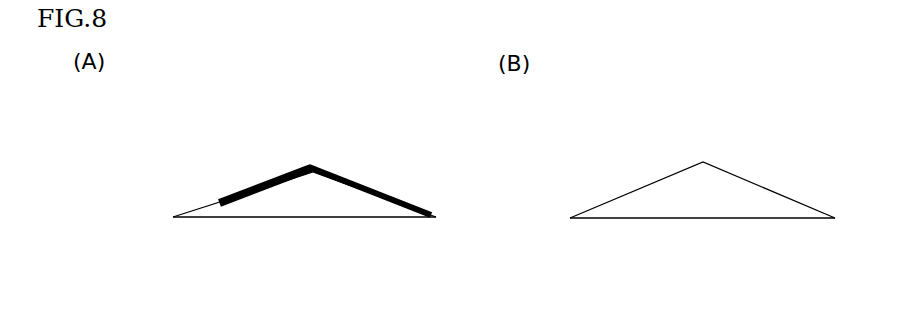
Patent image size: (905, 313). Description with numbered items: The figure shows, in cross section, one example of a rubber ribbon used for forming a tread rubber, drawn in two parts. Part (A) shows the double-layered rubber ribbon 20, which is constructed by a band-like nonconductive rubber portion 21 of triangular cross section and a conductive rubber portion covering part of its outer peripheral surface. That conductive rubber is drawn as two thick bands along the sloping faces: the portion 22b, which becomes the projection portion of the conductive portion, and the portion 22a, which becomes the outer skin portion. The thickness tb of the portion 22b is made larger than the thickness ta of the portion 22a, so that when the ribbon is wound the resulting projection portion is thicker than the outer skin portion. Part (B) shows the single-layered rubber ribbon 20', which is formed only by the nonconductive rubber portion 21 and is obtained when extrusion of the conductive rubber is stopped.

The rubber ribbon 20 is at (294, 177).
The single-layered rubber ribbon 20' is at (698, 176).
The nonconductive rubber portion 21 is at (337, 205).
The portion of the conductive rubber portion 22a is at (377, 190).
The portion of the conductive rubber portion 22b is at (230, 192).
The thickness of portion 22a ta is at (318, 200).
The thickness of portion 22b tb is at (288, 210).